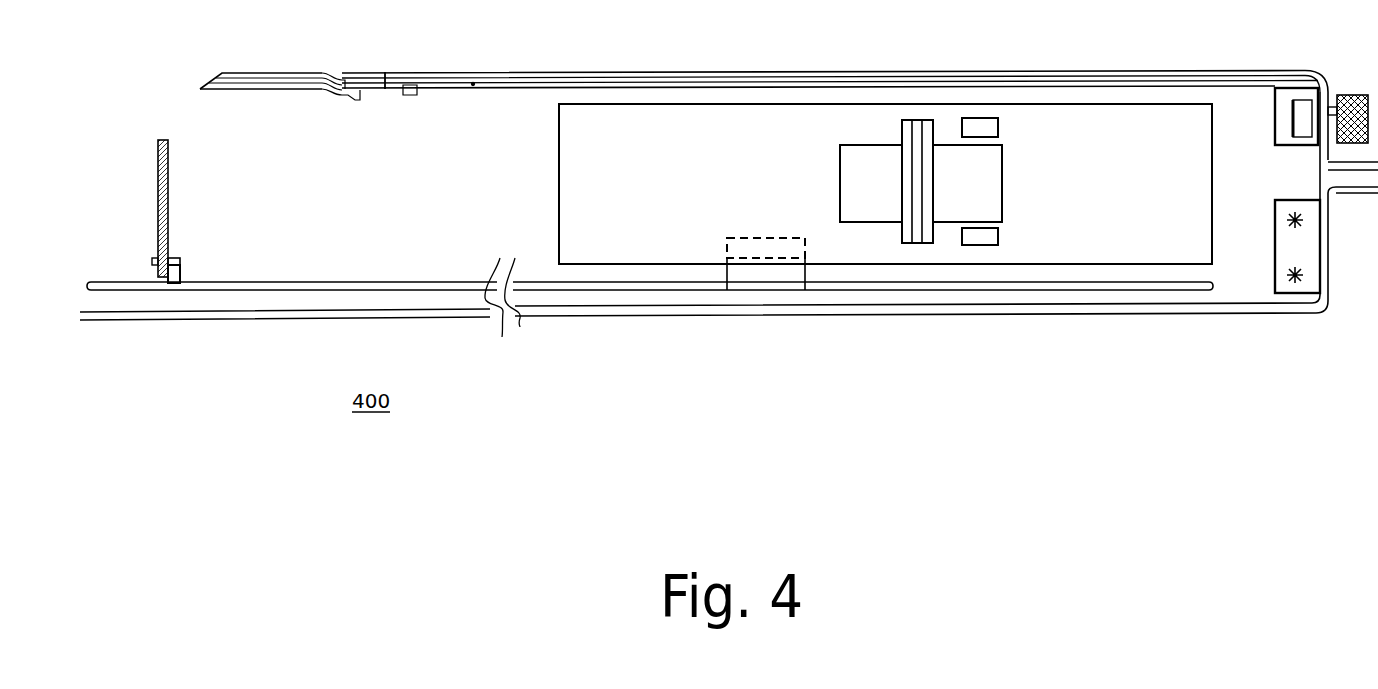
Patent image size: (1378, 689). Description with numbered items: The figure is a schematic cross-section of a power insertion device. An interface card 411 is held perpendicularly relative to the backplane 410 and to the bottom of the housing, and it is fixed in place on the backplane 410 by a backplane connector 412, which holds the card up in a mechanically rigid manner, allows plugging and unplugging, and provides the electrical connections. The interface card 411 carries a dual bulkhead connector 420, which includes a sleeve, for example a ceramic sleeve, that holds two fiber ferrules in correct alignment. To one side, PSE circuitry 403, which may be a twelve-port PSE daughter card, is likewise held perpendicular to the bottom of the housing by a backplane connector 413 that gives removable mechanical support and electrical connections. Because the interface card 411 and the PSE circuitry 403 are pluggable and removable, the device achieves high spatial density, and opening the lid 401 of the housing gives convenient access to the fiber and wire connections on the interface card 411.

The lid 401 is at (817, 72).
The PSE circuitry 403 is at (162, 175).
The backplane 410 is at (375, 287).
The interface card 411 is at (557, 150).
The backplane connector 412 is at (742, 245).
The backplane connector 413 is at (182, 272).
The dual bulkhead connector 420 is at (992, 173).